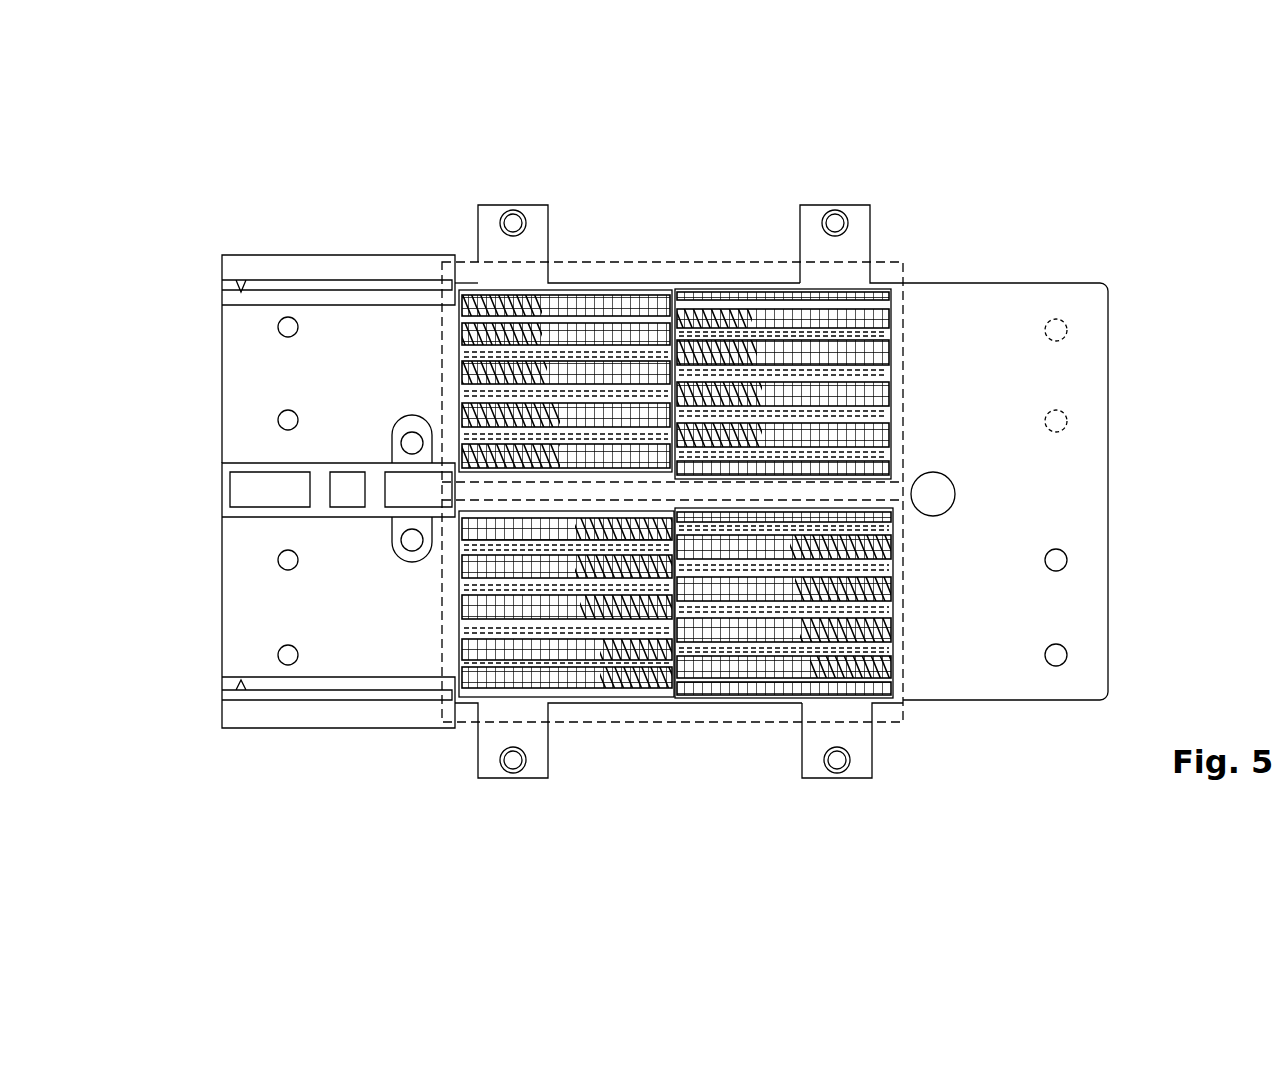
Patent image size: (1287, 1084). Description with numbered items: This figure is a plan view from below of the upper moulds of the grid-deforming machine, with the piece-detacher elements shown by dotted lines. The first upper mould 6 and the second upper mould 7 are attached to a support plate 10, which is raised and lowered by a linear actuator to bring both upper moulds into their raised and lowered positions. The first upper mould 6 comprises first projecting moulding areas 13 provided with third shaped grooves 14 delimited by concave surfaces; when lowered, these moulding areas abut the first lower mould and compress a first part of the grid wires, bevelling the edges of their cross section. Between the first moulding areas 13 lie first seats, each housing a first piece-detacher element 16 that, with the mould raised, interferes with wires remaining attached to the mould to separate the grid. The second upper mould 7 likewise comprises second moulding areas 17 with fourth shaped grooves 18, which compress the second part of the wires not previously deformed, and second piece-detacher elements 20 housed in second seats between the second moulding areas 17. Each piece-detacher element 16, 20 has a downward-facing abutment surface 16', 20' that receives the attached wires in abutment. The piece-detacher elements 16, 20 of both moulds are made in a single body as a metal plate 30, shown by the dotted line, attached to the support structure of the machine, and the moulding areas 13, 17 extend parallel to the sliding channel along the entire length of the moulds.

The first upper mould 6 is at (545, 706).
The second upper mould 7 is at (797, 706).
The support plate 10 is at (1040, 296).
The first projecting moulding areas 13 is at (462, 531).
The third shaped grooves 14 is at (527, 612).
The first piece-detacher element 16 is at (566, 656).
The abutment surface 16' is at (490, 348).
The second moulding areas 17 is at (893, 547).
The fourth shaped grooves 18 is at (818, 625).
The second piece-detacher element 20 is at (783, 679).
The abutment surface 20' is at (823, 336).
The metal plate 30 is at (660, 262).